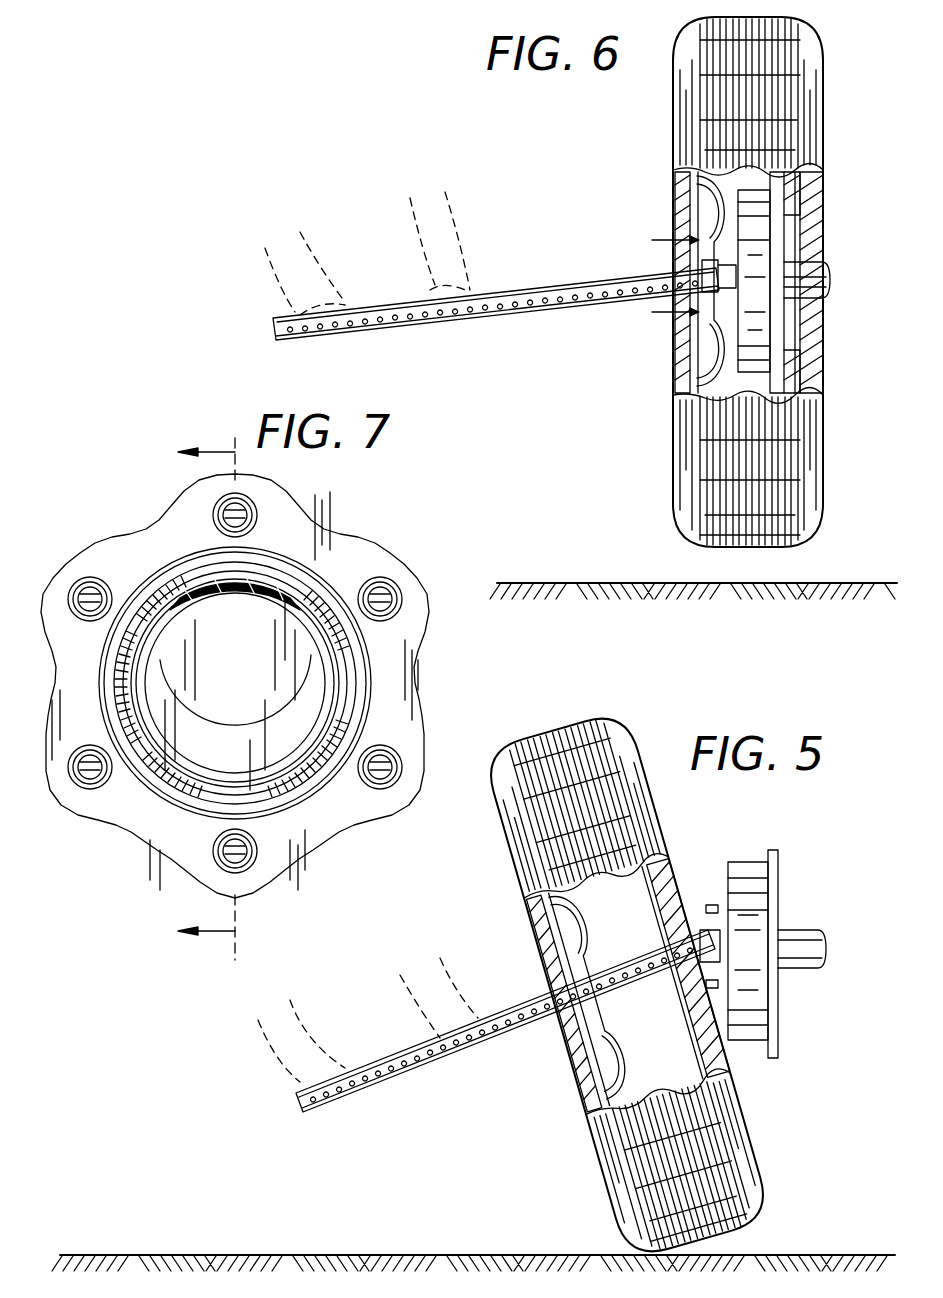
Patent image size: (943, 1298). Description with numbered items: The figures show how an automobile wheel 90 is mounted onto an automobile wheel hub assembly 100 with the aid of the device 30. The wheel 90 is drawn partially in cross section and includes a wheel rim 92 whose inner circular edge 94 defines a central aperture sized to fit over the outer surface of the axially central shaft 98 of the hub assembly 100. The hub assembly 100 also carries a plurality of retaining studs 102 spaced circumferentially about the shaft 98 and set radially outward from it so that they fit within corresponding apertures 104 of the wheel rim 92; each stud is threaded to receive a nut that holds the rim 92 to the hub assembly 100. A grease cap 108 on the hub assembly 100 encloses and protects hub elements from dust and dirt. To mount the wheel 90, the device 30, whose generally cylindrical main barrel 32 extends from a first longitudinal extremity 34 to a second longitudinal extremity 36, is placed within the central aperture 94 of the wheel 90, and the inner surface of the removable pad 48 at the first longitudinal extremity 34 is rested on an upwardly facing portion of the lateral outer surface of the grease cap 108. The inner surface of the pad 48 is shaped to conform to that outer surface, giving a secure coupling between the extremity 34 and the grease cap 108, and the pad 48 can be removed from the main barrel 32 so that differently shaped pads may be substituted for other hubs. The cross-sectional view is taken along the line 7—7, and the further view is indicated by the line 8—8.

In FIG. 6, the section line 7— 7 is at (670, 277).
In FIG. 7, the section line 8— 8 is at (194, 698).
In FIG. 6, the device 30 is at (370, 334).
In FIG. 5, the device 30 is at (408, 1082).
In FIG. 7, the main barrel 32 is at (265, 575).
In FIG. 5, the first longitudinal extremity 34 is at (712, 908).
In FIG. 6, the second longitudinal extremity 36 is at (258, 314).
In FIG. 7, the removable pad 48 is at (240, 588).
In FIG. 5, the automobile wheel 90 is at (578, 745).
In FIG. 5, the wheel rim 92 is at (592, 1112).
In FIG. 7, the inner circular edge 94 is at (270, 860).
In FIG. 5, the inner circular edge 94 is at (560, 1015).
In FIG. 7, the axially central shaft 98 is at (355, 680).
In FIG. 5, the axially central shaft 98 is at (725, 955).
In FIG. 6, the automobile wheel hub assembly 100 is at (785, 248).
In FIG. 7, the automobile wheel hub assembly 100 is at (92, 868).
In FIG. 5, the automobile wheel hub assembly 100 is at (848, 905).
In FIG. 7, the retaining studs 102 is at (122, 805).
In FIG. 7, the apertures 104 is at (402, 600).
In FIG. 7, the grease cap 108 is at (228, 761).
In FIG. 5, the grease cap 108 is at (718, 1030).